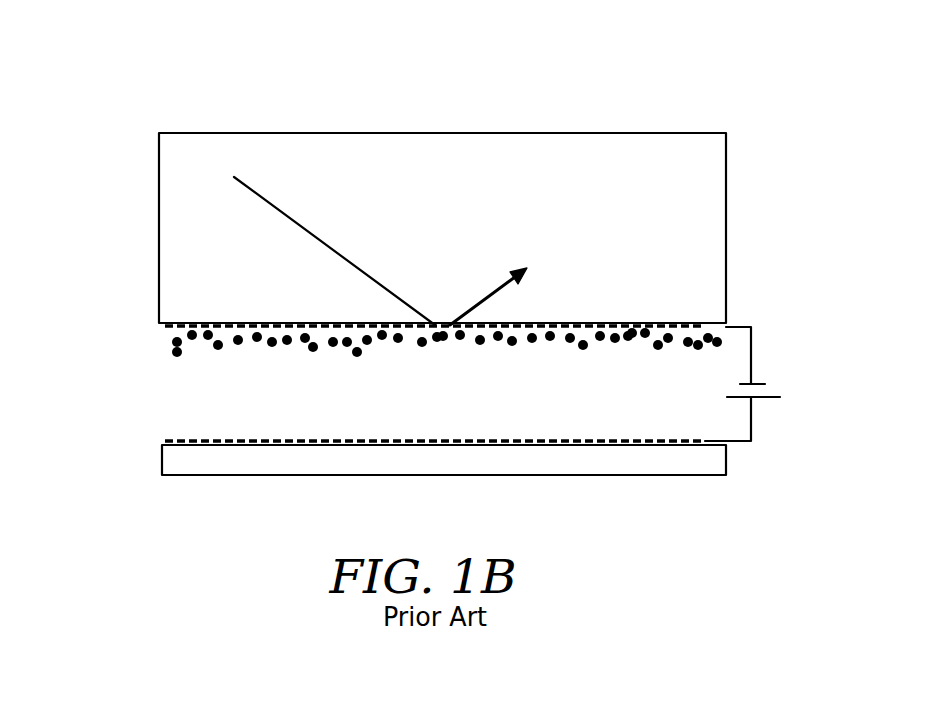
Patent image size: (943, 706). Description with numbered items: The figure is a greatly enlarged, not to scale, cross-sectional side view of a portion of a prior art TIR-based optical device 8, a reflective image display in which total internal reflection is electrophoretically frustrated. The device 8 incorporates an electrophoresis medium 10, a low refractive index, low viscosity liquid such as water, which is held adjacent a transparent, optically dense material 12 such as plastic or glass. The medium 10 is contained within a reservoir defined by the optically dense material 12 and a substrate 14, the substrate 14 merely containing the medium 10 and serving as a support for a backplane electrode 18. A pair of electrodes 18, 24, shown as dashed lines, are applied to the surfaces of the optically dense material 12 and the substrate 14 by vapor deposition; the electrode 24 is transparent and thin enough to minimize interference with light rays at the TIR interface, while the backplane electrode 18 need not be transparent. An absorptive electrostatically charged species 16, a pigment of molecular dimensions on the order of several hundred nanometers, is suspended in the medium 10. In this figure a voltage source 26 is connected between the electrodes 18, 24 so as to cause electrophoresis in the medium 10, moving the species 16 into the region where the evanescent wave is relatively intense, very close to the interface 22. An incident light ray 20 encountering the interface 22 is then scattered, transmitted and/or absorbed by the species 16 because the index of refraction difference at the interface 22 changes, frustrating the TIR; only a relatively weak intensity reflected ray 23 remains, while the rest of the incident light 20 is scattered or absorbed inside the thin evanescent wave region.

The TIR-based optical device 8 is at (318, 100).
The electrophoresis medium 10 is at (176, 407).
The transparent optically dense material 12 is at (180, 170).
The substrate 14 is at (378, 462).
The electrostatically charged species 16 is at (667, 347).
The backplane electrode 18 is at (557, 437).
The light ray 20 is at (265, 201).
The interface 22 is at (225, 322).
The reflected ray 23 is at (503, 283).
The electrode 24 is at (167, 333).
The voltage source 26 is at (780, 397).